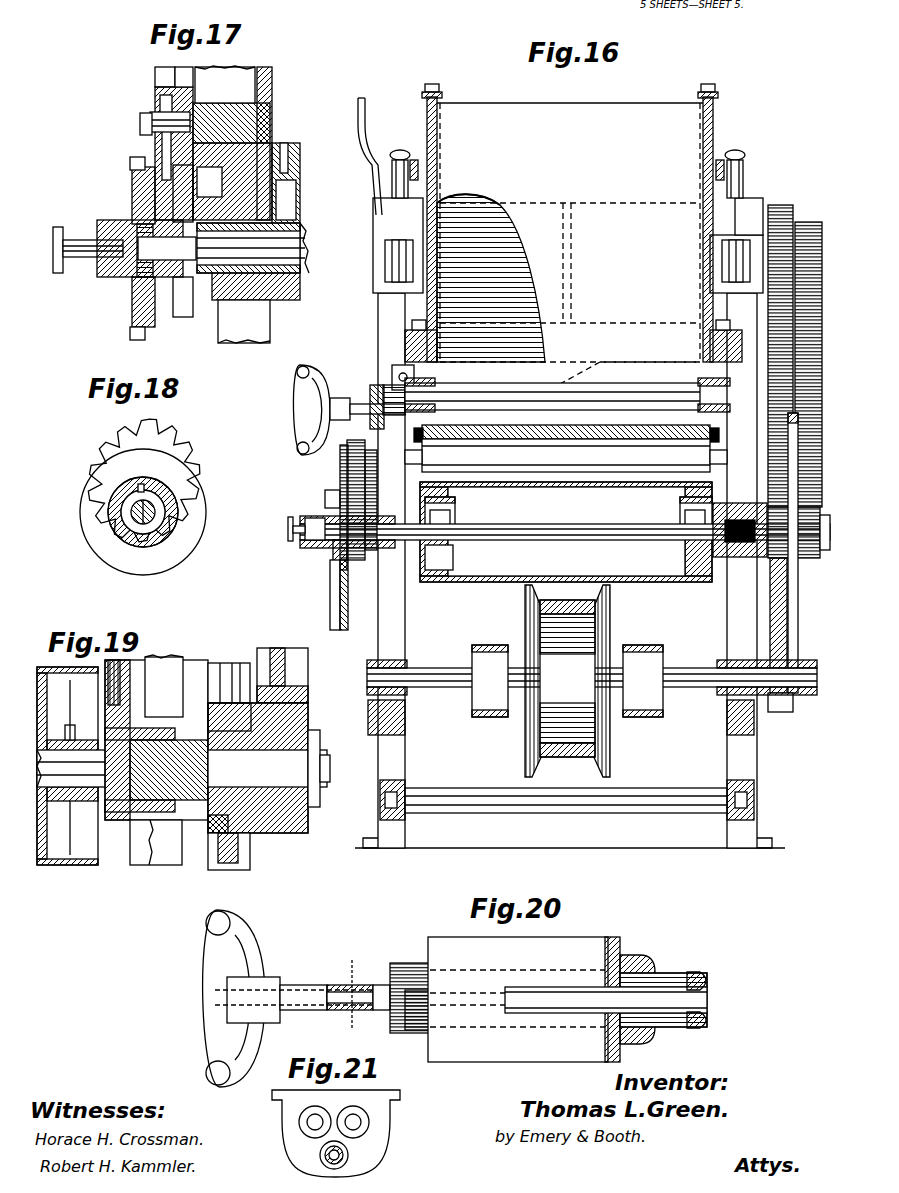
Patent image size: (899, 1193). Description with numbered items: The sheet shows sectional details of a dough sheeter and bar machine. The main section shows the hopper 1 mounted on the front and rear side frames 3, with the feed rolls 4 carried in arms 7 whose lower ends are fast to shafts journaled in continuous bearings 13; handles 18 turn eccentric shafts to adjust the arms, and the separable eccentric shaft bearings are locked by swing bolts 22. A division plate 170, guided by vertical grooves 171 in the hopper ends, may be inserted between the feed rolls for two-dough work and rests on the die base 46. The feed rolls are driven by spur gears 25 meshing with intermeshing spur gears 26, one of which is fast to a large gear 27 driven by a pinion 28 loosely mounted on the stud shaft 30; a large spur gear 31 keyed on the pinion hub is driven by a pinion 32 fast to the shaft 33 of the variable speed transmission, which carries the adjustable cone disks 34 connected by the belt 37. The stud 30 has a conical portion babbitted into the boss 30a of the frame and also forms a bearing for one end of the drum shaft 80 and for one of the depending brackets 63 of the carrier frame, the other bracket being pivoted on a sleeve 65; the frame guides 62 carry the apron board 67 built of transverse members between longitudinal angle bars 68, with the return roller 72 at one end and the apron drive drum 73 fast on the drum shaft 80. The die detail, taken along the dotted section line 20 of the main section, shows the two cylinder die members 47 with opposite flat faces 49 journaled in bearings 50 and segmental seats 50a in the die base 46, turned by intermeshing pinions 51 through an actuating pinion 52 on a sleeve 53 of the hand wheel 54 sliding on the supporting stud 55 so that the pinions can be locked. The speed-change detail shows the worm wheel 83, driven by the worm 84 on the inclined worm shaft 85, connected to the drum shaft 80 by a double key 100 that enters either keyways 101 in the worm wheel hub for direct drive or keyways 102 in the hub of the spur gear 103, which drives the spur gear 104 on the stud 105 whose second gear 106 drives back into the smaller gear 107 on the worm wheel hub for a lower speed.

In FIG. 16, the hopper 1 is at (685, 145).
In FIG. 17, the side frames 3 is at (268, 90).
In FIG. 19, the side frames 3 is at (183, 665).
In FIG. 16, the side frames 3 is at (378, 578).
In FIG. 16, the feed rolls 4 is at (480, 225).
In FIG. 16, the arms 7 is at (378, 318).
In FIG. 16, the continuous bearings 13 is at (405, 358).
In FIG. 17, the handles 18 is at (142, 150).
In FIG. 16, the handles 18 is at (368, 130).
In FIG. 16, the section line 20- 20 is at (605, 355).
In FIG. 16, the swing bolts 22 is at (403, 150).
In FIG. 16, the spur gears 25 is at (781, 210).
In FIG. 16, the intermeshing spur gears 26 is at (710, 360).
In FIG. 19, the large gear 27 is at (272, 660).
In FIG. 16, the large gear 27 is at (810, 225).
In FIG. 19, the pinion 28 is at (268, 835).
In FIG. 16, the pinion 28 is at (790, 570).
In FIG. 19, the stud shaft 30 is at (296, 832).
In FIG. 16, the stud shaft 30 is at (800, 558).
In FIG. 19, the boss 30a is at (152, 850).
In FIG. 16, the boss 30a is at (725, 560).
In FIG. 19, the large spur gear 31 is at (228, 665).
In FIG. 16, the large spur gear 31 is at (790, 620).
In FIG. 16, the pinion 32 is at (780, 712).
In FIG. 16, the shaft 33 is at (700, 692).
In FIG. 16, the adjustable cone disks 34 is at (525, 740).
In FIG. 16, the belt 37 is at (567, 690).
In FIG. 20, the die base 46 is at (650, 965).
In FIG. 21, the die base 46 is at (372, 1145).
In FIG. 20, the cylinder die members 47 is at (705, 980).
In FIG. 16, the flat faces 49 is at (600, 395).
In FIG. 20, the flat faces 49 is at (708, 1000).
In FIG. 20, the bearings 50 is at (478, 975).
In FIG. 20, the segmental seats 50a is at (630, 965).
In FIG. 16, the pinions 51 is at (383, 396).
In FIG. 20, the pinions 51 is at (410, 965).
In FIG. 21, the pinions 51 is at (298, 1120).
In FIG. 16, the actuating pinion 52 is at (378, 418).
In FIG. 20, the actuating pinion 52 is at (392, 985).
In FIG. 21, the actuating pinion 52 is at (320, 1155).
In FIG. 20, the sleeve 53 is at (340, 985).
In FIG. 21, the sleeve 53 is at (345, 1152).
In FIG. 16, the adjustable hand wheel 54 is at (298, 402).
In FIG. 20, the adjustable hand wheel 54 is at (210, 985).
In FIG. 20, the supporting stud 55 is at (345, 1000).
In FIG. 21, the supporting stud 55 is at (345, 1162).
In FIG. 17, the angle bar members 62 is at (285, 170).
In FIG. 19, the angle bar members 62 is at (130, 700).
In FIG. 16, the angle bar members 62 is at (445, 500).
In FIG. 17, the depending brackets 63 is at (290, 185).
In FIG. 19, the depending brackets 63 is at (132, 706).
In FIG. 16, the depending brackets 63 is at (445, 512).
In FIG. 16, the sleeve 65 is at (445, 552).
In FIG. 16, the apron board 67 is at (480, 428).
In FIG. 16, the longitudinal angle bars 68 is at (438, 425).
In FIG. 16, the return roller 72 is at (578, 460).
In FIG. 19, the apron drive drum 73 is at (62, 866).
In FIG. 16, the apron drive drum 73 is at (508, 583).
In FIG. 17, the drum shaft 80 is at (285, 240).
In FIG. 19, the drum shaft 80 is at (83, 778).
In FIG. 16, the drum shaft 80 is at (575, 537).
In FIG. 17, the worm wheel 83 is at (135, 322).
In FIG. 18, the worm wheel 83 is at (107, 440).
In FIG. 16, the worm wheel 83 is at (345, 562).
In FIG. 16, the worm 84 is at (340, 582).
In FIG. 16, the inclined worm shaft 85 is at (345, 625).
In FIG. 17, the double key 100 is at (125, 265).
In FIG. 17, the keyways 101 is at (132, 205).
In FIG. 18, the keyways 101 is at (135, 495).
In FIG. 17, the keyways 102 is at (200, 210).
In FIG. 17, the spur gear 103 is at (186, 310).
In FIG. 16, the spur gear 103 is at (335, 555).
In FIG. 17, the spur gear 104 is at (184, 70).
In FIG. 16, the spur gear 104 is at (355, 480).
In FIG. 17, the stud 105 is at (150, 118).
In FIG. 17, the second gear 106 is at (163, 72).
In FIG. 16, the second gear 106 is at (350, 450).
In FIG. 17, the smaller gear 107 is at (131, 163).
In FIG. 18, the smaller gear 107 is at (135, 525).
In FIG. 16, the smaller gear 107 is at (328, 504).
In FIG. 16, the division plate 170 is at (502, 115).
In FIG. 16, the vertical grooves 171 is at (445, 215).